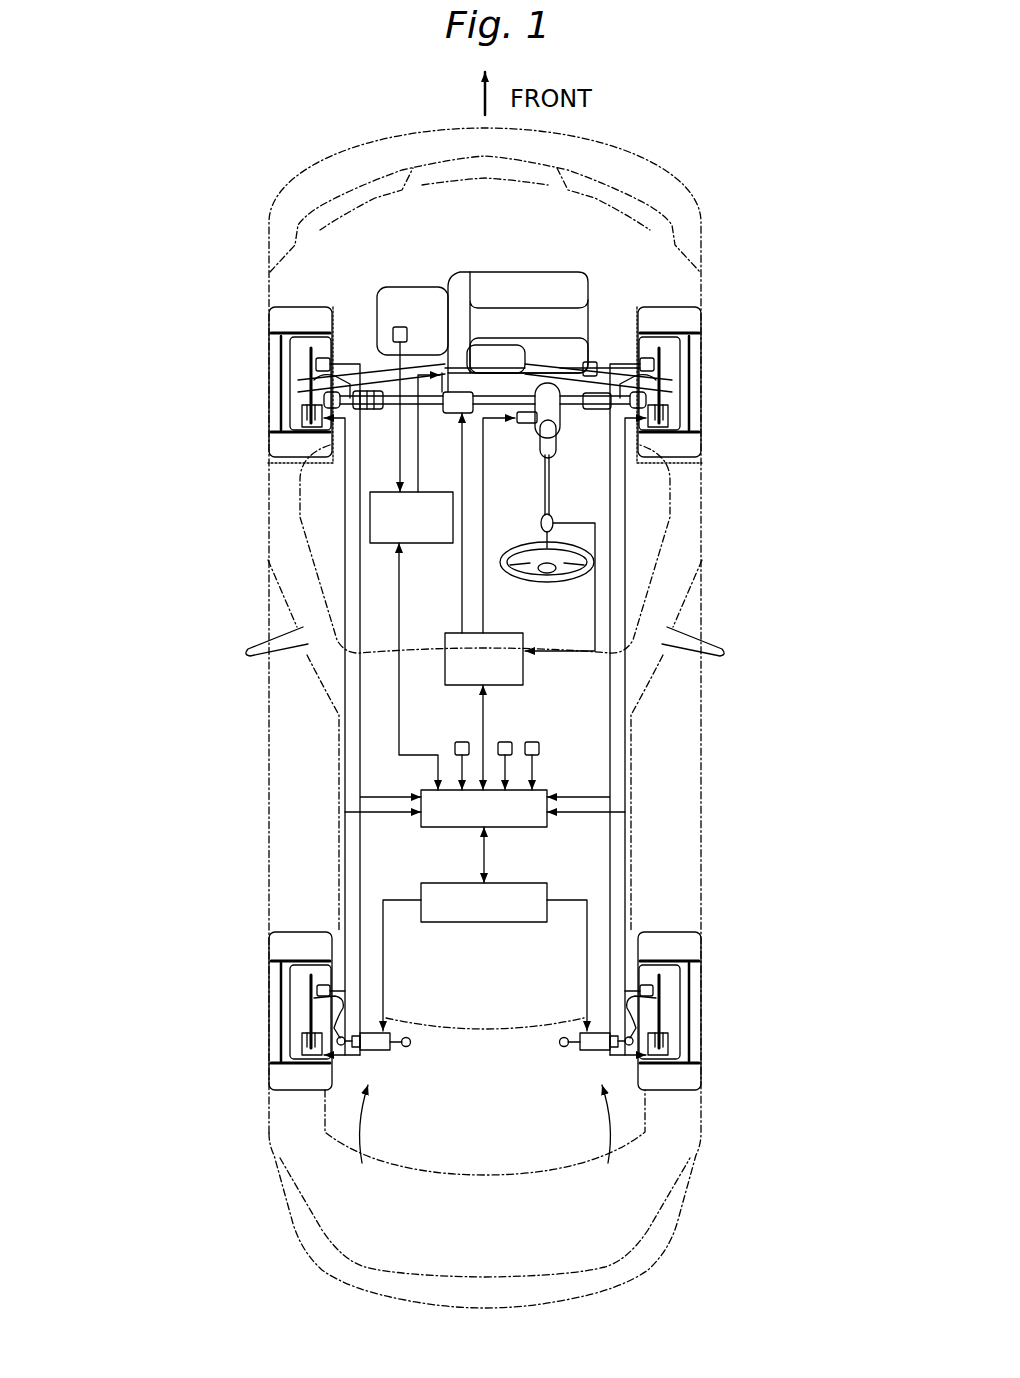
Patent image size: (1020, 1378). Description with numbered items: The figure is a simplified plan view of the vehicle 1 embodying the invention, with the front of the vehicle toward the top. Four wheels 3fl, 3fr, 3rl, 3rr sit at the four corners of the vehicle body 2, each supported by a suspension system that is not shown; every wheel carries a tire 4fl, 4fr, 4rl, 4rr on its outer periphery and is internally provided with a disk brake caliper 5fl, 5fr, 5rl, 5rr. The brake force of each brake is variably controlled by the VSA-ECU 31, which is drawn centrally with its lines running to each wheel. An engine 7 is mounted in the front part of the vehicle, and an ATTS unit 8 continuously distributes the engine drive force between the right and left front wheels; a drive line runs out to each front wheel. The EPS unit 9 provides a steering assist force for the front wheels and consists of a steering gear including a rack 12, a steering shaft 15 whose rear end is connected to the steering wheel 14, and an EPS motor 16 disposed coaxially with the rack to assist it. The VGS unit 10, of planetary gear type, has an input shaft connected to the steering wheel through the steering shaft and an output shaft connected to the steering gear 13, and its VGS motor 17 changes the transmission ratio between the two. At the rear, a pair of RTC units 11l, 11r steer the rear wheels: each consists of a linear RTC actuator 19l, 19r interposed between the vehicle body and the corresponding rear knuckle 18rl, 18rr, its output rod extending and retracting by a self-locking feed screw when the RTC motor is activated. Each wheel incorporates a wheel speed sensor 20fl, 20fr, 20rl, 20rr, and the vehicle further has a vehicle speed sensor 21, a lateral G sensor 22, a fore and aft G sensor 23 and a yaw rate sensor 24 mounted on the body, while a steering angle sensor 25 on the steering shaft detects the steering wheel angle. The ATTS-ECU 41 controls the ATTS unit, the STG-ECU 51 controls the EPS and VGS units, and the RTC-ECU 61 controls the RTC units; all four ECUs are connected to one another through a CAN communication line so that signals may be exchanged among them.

The vehicle 1 is at (268, 178).
The vehicle body 2 is at (692, 220).
The left front wheel 3fl is at (272, 345).
The right front wheel 3fr is at (698, 345).
The left rear wheel 3rl is at (272, 972).
The right rear wheel 3rr is at (698, 972).
The tire 4fl is at (280, 455).
The tire 4fr is at (690, 455).
The tire 4rl is at (280, 1082).
The tire 4rr is at (690, 1082).
The brake 5fl is at (302, 416).
The brake 5fr is at (668, 416).
The brake 5rl is at (302, 1044).
The brake 5rr is at (668, 1044).
The engine 7 is at (553, 270).
The ATTS unit 8 is at (503, 347).
The EPS unit 9 is at (452, 382).
The VGS unit 10 is at (565, 433).
The RTC unit 11l is at (367, 1141).
The RTC unit 11r is at (619, 1141).
The rack 12 is at (392, 412).
The steering gear 13 is at (590, 378).
The steering wheel 14 is at (540, 582).
The steering shaft 15 is at (552, 505).
The EPS motor 16 is at (447, 415).
The VGS motor 17 is at (527, 426).
The knuckle 18rl is at (330, 1012).
The knuckle 18rr is at (640, 1012).
The RTC actuator 19l is at (385, 1050).
The RTC actuator 19r is at (585, 1050).
The wheel speed sensor 20fl is at (315, 364).
The wheel speed sensor 20fr is at (655, 364).
The wheel speed sensor 20rl is at (317, 990).
The wheel speed sensor 20rr is at (653, 990).
The vehicle speed sensor 21 is at (392, 328).
The lateral G sensor 22 is at (462, 740).
The fore and aft G sensor 23 is at (505, 741).
The yaw rate sensor 24 is at (533, 741).
The steering angle sensor 25 is at (544, 520).
The VSA-ECU 31 is at (548, 792).
The ATTS-ECU 41 is at (421, 543).
The STG-ECU 51 is at (526, 650).
The RTC-ECU 61 is at (525, 883).